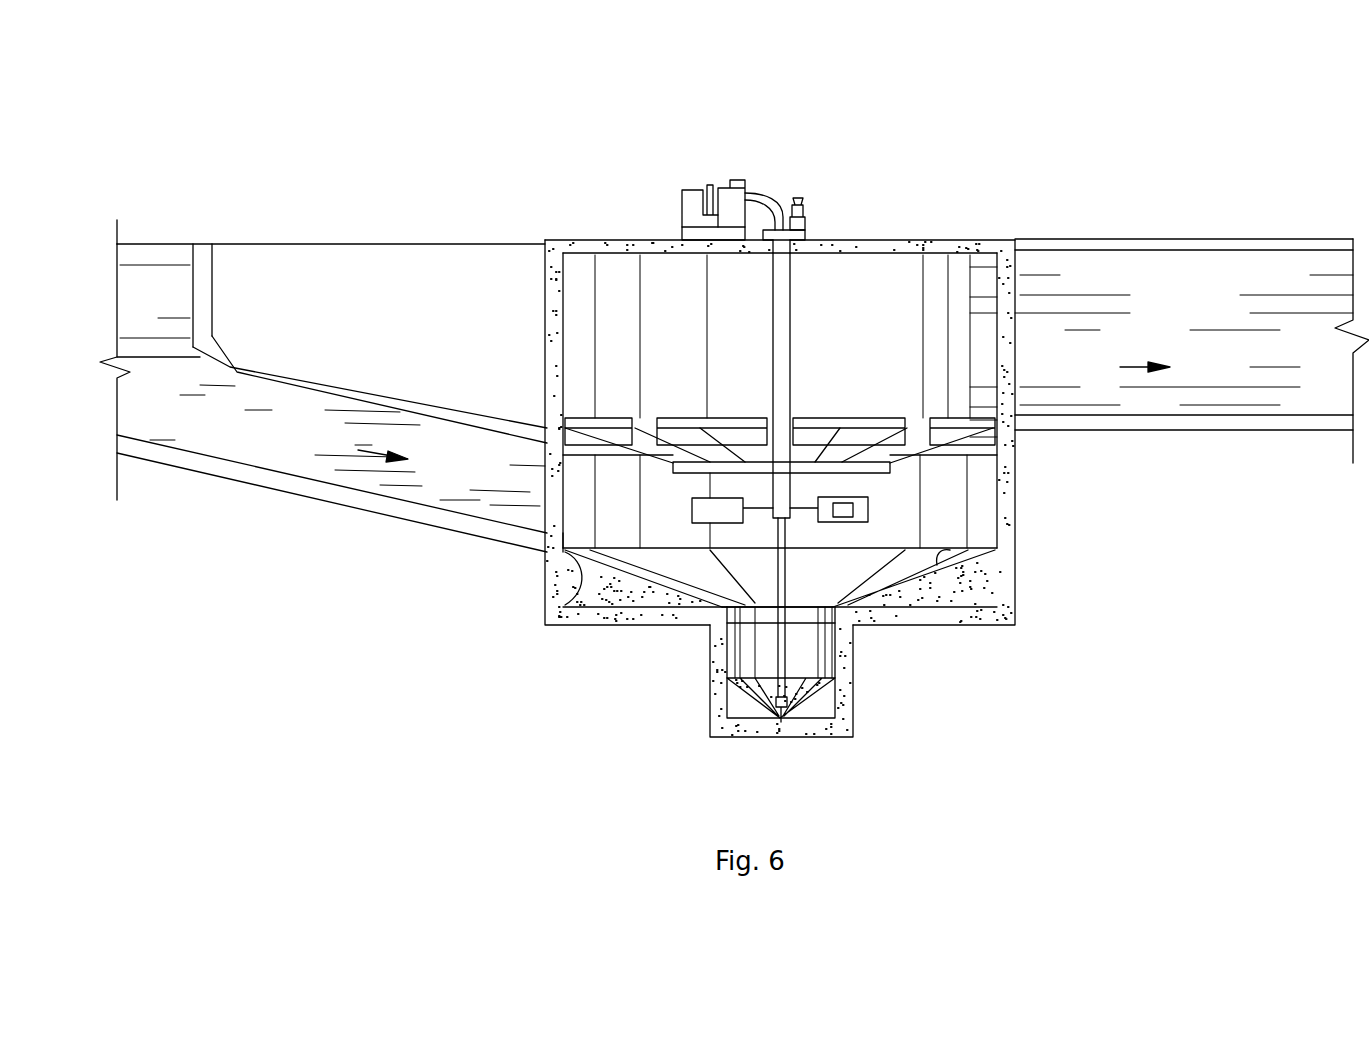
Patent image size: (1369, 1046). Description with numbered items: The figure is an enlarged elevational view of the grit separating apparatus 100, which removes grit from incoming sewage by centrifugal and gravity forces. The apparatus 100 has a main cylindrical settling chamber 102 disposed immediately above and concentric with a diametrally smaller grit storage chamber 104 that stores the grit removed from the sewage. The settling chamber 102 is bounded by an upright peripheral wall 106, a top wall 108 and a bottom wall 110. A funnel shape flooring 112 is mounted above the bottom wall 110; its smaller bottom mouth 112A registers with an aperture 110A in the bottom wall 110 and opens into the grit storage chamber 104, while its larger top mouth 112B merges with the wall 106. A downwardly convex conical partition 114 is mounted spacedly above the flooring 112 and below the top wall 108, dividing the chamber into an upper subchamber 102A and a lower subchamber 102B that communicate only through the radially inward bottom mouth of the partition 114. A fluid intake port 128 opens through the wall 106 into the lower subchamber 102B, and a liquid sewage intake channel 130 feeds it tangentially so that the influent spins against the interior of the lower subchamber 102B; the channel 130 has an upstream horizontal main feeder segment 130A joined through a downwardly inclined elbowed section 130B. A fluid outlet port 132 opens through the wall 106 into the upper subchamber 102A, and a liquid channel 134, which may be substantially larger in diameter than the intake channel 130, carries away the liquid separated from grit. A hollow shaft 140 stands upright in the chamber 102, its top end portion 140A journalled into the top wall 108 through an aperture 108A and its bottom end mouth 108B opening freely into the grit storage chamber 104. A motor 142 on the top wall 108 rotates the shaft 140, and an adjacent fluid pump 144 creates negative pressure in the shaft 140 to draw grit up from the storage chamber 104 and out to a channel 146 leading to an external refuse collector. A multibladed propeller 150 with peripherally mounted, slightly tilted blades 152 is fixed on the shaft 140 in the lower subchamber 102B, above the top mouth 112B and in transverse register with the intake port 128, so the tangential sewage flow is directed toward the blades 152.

The apparatus for separating grit from incoming grit sewage 100 is at (556, 214).
The main cylindrical settling chamber 102 is at (538, 305).
The upper subchamber 102A is at (902, 353).
The lower subchamber 102B is at (957, 536).
The grit storage chamber 104 is at (704, 694).
The upright peripheral wall 106 is at (590, 332).
The top wall 108 is at (947, 253).
The aperture 108A is at (762, 252).
The bottom end mouth 108B is at (790, 700).
The bottom wall 110 is at (910, 613).
The aperture 110A is at (833, 615).
The funnel shape flooring 112 is at (940, 562).
The bottom mouth 112A is at (750, 600).
The top mouth 112B is at (590, 550).
The conical partition 114 is at (939, 455).
The fluid intake port 128 is at (590, 513).
The liquid sewage intake channel 130 is at (290, 468).
The main feeder segment 130A is at (142, 282).
The elbowed section 130B is at (233, 360).
The fluid outlet port 132 is at (993, 307).
The liquid channel 134 is at (1125, 250).
The hollow shaft 140 is at (782, 307).
The top end portion 140A is at (825, 240).
The motor 142 is at (695, 207).
The fluid pump 144 is at (733, 200).
The channel 146 is at (800, 200).
The multibladed propeller 150 is at (807, 525).
The blades 152 is at (705, 513).